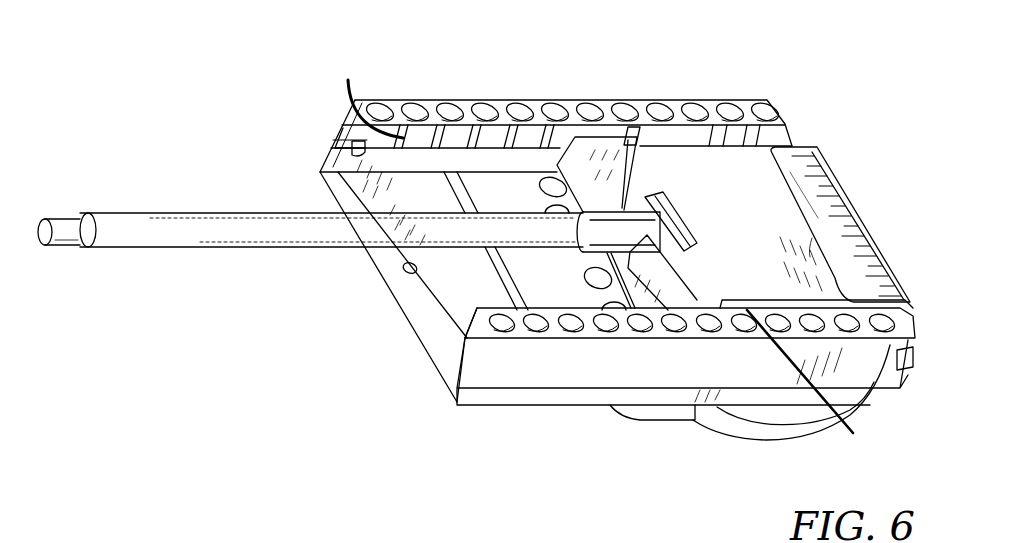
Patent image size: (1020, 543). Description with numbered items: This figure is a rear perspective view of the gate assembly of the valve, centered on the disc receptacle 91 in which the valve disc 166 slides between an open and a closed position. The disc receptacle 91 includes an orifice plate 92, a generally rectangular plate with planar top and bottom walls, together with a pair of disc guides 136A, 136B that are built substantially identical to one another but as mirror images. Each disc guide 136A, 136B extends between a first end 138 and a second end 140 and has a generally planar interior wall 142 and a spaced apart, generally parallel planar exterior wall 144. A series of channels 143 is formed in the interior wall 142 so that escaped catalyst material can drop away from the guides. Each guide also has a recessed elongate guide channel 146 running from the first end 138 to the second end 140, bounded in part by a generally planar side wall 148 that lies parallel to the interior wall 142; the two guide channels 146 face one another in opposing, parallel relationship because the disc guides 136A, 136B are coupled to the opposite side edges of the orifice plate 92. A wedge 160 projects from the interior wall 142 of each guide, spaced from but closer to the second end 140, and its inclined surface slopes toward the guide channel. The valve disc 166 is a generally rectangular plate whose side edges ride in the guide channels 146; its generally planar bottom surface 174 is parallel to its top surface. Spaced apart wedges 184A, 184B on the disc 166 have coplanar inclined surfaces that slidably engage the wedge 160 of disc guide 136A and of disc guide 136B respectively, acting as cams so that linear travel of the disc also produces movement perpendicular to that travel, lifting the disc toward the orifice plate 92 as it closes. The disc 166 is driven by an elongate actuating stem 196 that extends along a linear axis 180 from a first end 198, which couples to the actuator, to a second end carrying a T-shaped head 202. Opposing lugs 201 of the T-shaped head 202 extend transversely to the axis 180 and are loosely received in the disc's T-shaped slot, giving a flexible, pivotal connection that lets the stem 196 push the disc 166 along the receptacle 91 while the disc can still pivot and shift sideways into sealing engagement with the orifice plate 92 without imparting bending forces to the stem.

The disc receptacle 91 is at (557, 97).
The orifice plate 92 is at (386, 269).
The disc guide 136A is at (399, 108).
The disc guide 136B is at (742, 407).
The first end 138 is at (435, 375).
The second end 140 is at (913, 381).
The interior wall 142 is at (357, 108).
The channels 143 is at (448, 294).
The exterior wall 144 is at (590, 375).
The guide channel 146 is at (343, 142).
The side wall 148 is at (335, 173).
The wedge 160 is at (768, 150).
The valve disc 166 is at (745, 228).
The bottom surface 174 is at (808, 258).
The linear axis 180 is at (35, 231).
The wedge 184A is at (743, 140).
The wedge 184B is at (826, 388).
The actuating stem 196 is at (143, 203).
The first end 198 is at (60, 243).
The lugs 201 is at (698, 208).
The T-shaped head 202 is at (658, 192).